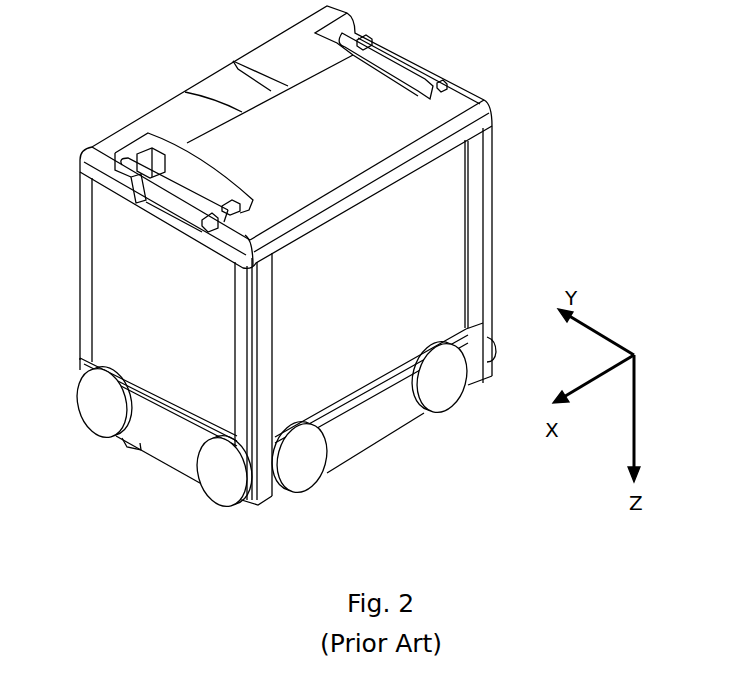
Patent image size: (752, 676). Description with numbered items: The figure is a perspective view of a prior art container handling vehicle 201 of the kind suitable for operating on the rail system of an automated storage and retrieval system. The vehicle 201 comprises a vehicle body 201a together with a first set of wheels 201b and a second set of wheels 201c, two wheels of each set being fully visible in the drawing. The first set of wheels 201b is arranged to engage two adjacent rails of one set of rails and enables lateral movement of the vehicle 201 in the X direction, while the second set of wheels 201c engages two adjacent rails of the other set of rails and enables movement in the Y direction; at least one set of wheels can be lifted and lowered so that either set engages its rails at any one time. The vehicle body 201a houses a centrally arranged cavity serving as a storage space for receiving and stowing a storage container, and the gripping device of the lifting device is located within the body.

The container handling vehicle 201 is at (367, 285).
The vehicle body 201a is at (178, 112).
The first set of wheels 201b is at (428, 449).
The second set of wheels 201c is at (116, 472).